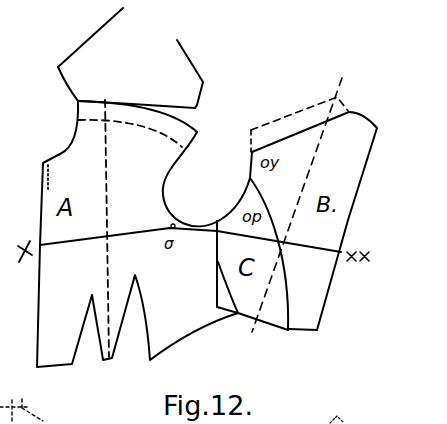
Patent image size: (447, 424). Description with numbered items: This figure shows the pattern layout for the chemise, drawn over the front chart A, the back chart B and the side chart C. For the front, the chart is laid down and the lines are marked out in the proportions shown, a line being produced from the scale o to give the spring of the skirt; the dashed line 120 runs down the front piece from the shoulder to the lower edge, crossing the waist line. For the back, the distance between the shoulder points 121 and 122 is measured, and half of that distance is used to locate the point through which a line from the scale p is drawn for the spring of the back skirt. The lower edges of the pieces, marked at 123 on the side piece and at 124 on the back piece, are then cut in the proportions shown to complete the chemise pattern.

The center line of front pattern piece A 120 is at (120, 228).
The shoulder point of the back chart 121 is at (312, 124).
The shoulder point of the back chart 122 is at (421, 121).
The lower edge of side pattern piece C 123 is at (268, 333).
The lower edge of back pattern piece B 124 is at (318, 338).